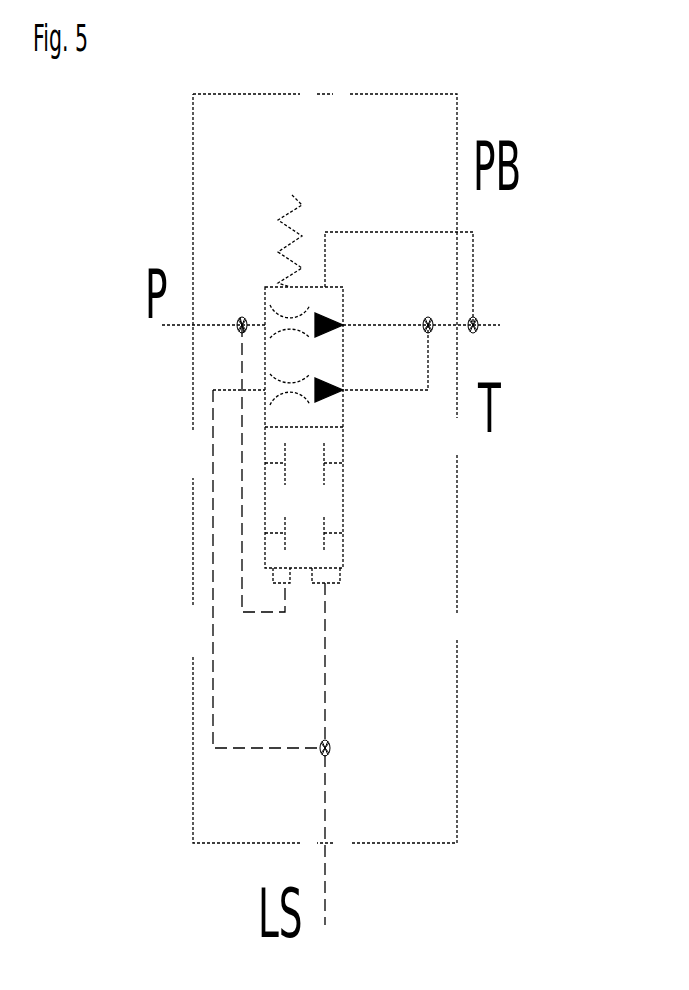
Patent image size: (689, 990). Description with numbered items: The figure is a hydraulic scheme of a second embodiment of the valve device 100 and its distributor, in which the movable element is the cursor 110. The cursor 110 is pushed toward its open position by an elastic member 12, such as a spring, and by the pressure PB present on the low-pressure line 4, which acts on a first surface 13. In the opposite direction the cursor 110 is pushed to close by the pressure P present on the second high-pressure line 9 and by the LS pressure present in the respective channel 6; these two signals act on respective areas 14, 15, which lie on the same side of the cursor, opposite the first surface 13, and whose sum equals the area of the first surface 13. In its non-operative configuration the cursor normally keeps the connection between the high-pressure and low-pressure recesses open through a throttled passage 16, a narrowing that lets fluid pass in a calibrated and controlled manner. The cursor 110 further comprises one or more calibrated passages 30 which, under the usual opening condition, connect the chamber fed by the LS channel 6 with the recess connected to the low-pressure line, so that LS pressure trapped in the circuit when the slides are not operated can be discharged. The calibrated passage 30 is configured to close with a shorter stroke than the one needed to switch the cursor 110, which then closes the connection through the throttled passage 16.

The low-pressure line 4 is at (431, 305).
The channel 6 is at (278, 657).
The second high-pressure line 9 is at (211, 347).
The elastic member 12 is at (293, 212).
The first surface 13 is at (310, 285).
The area 14 is at (277, 574).
The area 15 is at (332, 574).
The throttled passage 16 is at (292, 313).
The calibrated passage 30 is at (282, 400).
The valve device 100 is at (457, 620).
The cursor 110 is at (347, 470).